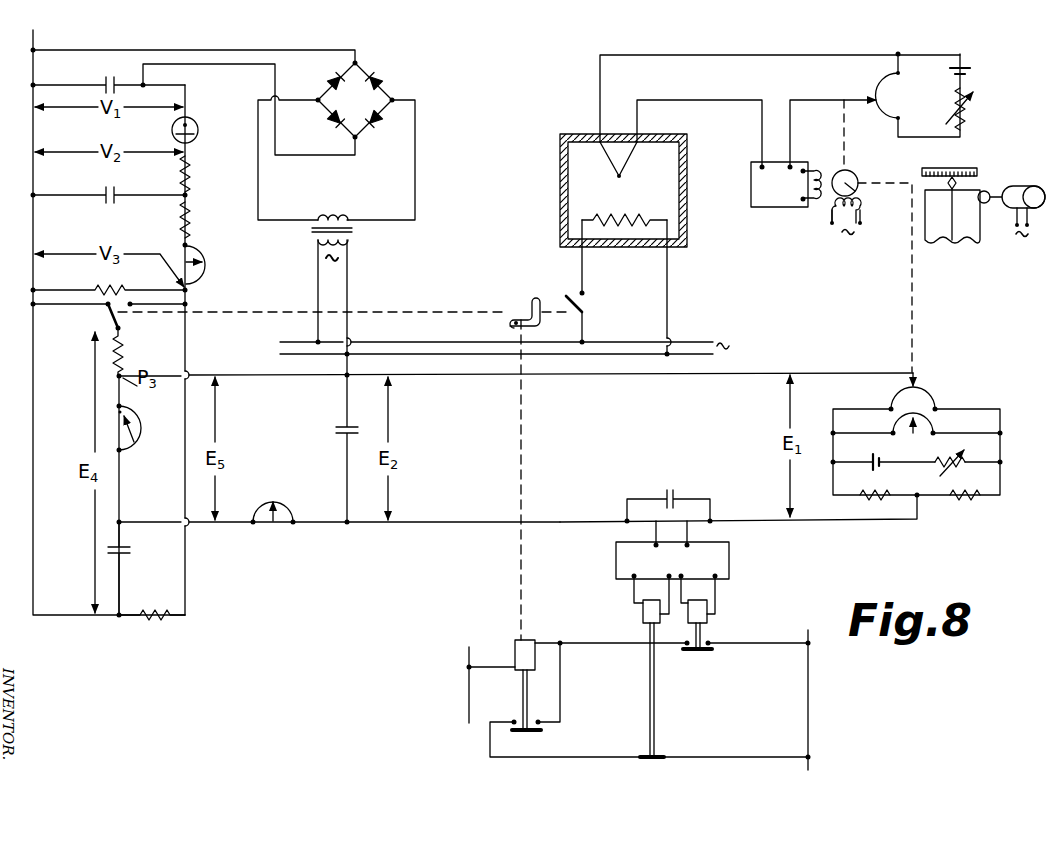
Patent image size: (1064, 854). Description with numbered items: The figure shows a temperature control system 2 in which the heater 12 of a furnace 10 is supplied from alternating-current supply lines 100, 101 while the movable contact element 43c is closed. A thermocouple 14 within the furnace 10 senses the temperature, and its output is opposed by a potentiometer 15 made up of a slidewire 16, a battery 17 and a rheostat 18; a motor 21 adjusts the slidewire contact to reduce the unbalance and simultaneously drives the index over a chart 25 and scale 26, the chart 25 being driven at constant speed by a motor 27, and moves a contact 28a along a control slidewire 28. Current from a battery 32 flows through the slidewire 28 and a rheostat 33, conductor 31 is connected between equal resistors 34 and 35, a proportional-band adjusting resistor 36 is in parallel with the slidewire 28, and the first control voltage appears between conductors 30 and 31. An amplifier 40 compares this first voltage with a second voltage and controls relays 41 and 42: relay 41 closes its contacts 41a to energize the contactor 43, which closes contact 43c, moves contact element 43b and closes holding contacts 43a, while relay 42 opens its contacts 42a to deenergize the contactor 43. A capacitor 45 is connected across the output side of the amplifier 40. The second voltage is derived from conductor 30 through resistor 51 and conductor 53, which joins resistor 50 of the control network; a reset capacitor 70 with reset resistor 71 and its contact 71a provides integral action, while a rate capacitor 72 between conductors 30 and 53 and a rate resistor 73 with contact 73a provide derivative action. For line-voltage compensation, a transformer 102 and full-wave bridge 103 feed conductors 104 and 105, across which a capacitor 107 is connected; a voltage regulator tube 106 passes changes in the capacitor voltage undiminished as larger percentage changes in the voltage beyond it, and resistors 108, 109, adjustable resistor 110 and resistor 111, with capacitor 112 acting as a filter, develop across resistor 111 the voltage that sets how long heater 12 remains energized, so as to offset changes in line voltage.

The control circuit 2 is at (33, 447).
The furnace 10 is at (560, 180).
The heating resistor 12 is at (638, 212).
The thermocouple 14 is at (612, 170).
The potentiometer 15 is at (930, 73).
The slidewire 16 is at (877, 84).
The battery 17 is at (970, 68).
The rheostat 18 is at (970, 112).
The motor 21 is at (853, 192).
The chart 25 is at (962, 238).
The scale 26 is at (958, 169).
The motor 27 is at (1020, 186).
The control slidewire 28 is at (929, 398).
The movable contact 28a is at (918, 383).
The conductor 30 is at (667, 376).
The conductor 31 is at (727, 518).
The battery 32 is at (871, 462).
The rheostat 33 is at (949, 462).
The resistor 34 is at (876, 497).
The resistor 35 is at (963, 500).
The proportional-band adjusting resistor 36 is at (930, 426).
The amplifier 40 is at (731, 564).
The relay 41 is at (708, 623).
The contacts 41a is at (701, 653).
The relay 42 is at (643, 613).
The contacts 42a is at (655, 760).
The circuit maker and breaker 43 is at (526, 648).
The holding contacts 43a is at (540, 736).
The contact element 43b is at (110, 316).
The movable contact element 43c is at (585, 308).
The capacitor 45 is at (667, 488).
The resistor 50 is at (166, 622).
The resistor 51 is at (125, 360).
The conductor 53 is at (549, 519).
The reset capacitor 70 is at (134, 554).
The reset resistor 71 is at (136, 446).
The meter terminal 71a is at (140, 403).
The rate capacitor 72 is at (338, 433).
The rate-controlling resistor 73 is at (288, 508).
The contact 73a is at (272, 526).
The alternating-current supply line 100 is at (613, 341).
The alternating-current supply line 101 is at (616, 346).
The transformer 102 is at (352, 236).
The full-wave bridge 103 is at (353, 85).
The conductor 104 is at (60, 50).
The conductor 105 is at (226, 66).
The voltage regulator tube 106 is at (198, 130).
The capacitor 107 is at (106, 80).
The resistor 108 is at (190, 174).
The resistor 109 is at (192, 222).
The adjustable resistor 110 is at (203, 252).
The resistor 111 is at (103, 290).
The capacitor 112 is at (108, 203).